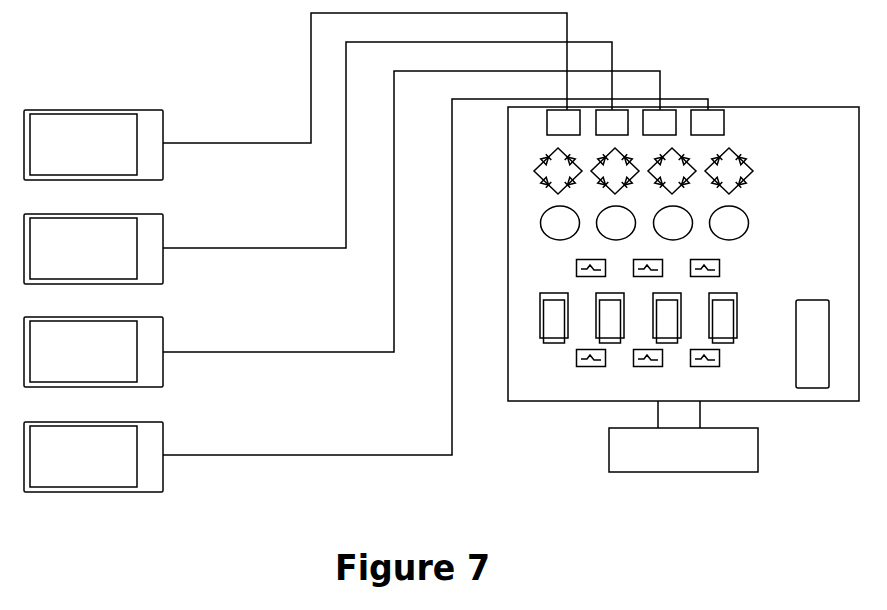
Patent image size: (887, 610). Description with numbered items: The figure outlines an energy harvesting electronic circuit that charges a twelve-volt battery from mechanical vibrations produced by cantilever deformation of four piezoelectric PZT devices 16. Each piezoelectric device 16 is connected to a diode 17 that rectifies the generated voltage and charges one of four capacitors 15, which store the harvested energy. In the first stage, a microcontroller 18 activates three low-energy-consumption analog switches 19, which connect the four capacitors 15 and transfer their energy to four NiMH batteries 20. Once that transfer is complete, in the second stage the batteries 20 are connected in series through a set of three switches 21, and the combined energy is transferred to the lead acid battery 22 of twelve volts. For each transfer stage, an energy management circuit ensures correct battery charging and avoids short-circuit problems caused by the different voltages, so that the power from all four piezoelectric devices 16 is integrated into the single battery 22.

The piezoelectric PZT device 16 is at (112, 145).
The diode 17 is at (656, 171).
The capacitor 15 is at (659, 223).
The analog switch 19 is at (661, 268).
The NiMH battery 20 is at (638, 318).
The ADG1634 switch 21 is at (648, 369).
The microcontroller 18 is at (812, 344).
The lead acid battery 22 is at (683, 436).